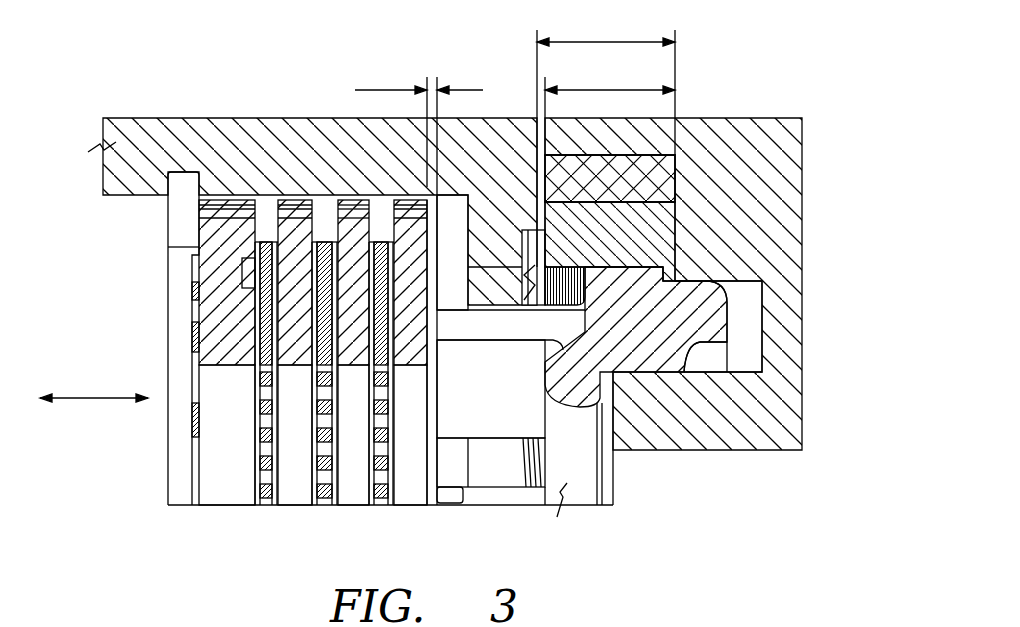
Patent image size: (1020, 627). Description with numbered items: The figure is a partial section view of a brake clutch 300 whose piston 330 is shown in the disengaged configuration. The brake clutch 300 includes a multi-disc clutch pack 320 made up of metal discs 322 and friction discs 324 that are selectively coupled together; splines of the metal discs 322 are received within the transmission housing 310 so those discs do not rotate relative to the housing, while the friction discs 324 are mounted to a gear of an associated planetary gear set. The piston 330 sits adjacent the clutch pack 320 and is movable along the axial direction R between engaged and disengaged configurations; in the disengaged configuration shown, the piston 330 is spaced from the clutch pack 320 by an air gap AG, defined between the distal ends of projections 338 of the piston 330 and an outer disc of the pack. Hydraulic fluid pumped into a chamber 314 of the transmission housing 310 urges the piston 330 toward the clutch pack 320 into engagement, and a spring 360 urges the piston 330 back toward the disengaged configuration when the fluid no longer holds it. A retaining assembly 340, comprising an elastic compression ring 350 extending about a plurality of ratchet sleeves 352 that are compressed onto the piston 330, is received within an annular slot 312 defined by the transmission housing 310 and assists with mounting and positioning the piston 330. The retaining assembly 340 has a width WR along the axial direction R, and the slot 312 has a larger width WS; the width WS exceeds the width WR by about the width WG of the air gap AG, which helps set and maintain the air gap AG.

The brake clutch 300 is at (350, 267).
The transmission housing 310 is at (768, 121).
The slot 312 is at (533, 188).
The chamber 314 is at (745, 327).
The multi-disc clutch pack 320 is at (196, 461).
The metal discs 322 is at (415, 497).
The friction discs 324 is at (320, 498).
The piston 330 is at (585, 483).
The projections 338 is at (507, 423).
The retaining assembly 340 is at (655, 201).
The elastic compression ring 350 is at (660, 173).
The ratchet sleeves 352 is at (660, 246).
The spring 360 is at (517, 295).
The air gap AG is at (432, 444).
The width of the air gap WG is at (373, 90).
The width of the slot WS is at (600, 42).
The width of the retaining assembly WR is at (588, 90).
The axial direction R is at (92, 383).